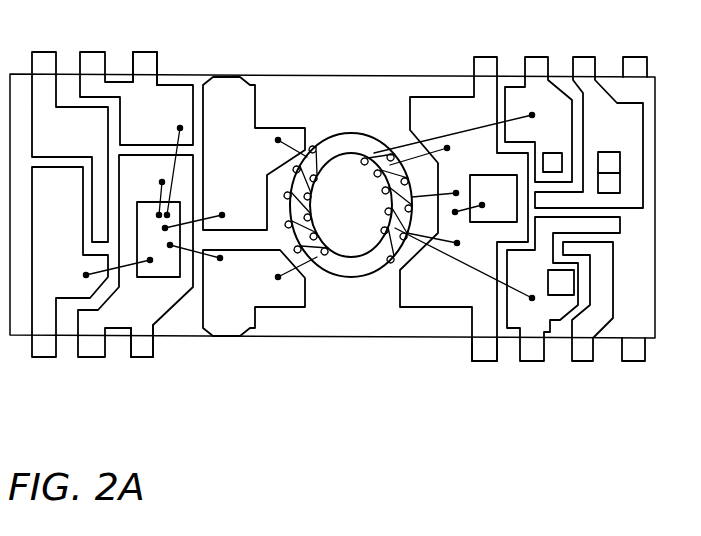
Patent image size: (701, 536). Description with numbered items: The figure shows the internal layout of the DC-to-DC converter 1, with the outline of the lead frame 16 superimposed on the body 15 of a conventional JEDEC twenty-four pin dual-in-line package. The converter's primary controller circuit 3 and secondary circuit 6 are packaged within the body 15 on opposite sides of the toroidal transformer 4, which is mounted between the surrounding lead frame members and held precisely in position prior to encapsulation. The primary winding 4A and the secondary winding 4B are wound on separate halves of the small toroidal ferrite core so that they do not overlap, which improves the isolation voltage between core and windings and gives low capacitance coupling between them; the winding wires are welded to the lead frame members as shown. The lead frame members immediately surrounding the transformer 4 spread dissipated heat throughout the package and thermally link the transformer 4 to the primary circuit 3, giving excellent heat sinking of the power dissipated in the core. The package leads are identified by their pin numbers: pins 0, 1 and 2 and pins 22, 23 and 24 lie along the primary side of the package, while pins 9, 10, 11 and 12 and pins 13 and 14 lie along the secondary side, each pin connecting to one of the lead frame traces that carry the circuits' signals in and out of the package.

The hybrid circuit package / lead frame 16 is at (170, 52).
The body 15 is at (290, 88).
The primary controller circuit 3 is at (144, 203).
The toroidal transformer 4 is at (348, 188).
The primary winding 4A is at (312, 214).
The secondary winding 4B is at (386, 191).
The secondary circuit 6 is at (488, 182).
The terminal pin 0 is at (70, 278).
The DC-to-DC converter 1 is at (135, 272).
The terminal pin 2 is at (142, 357).
The terminal pin 9 is at (484, 364).
The terminal pin 10 is at (563, 304).
The terminal pin 11 is at (588, 316).
The terminal pin 12 is at (633, 364).
The terminal pin 13 is at (635, 54).
The terminal pin 14 is at (589, 120).
The terminal pin 22 is at (145, 56).
The terminal pin 23 is at (136, 86).
The terminal pin 24 is at (69, 135).